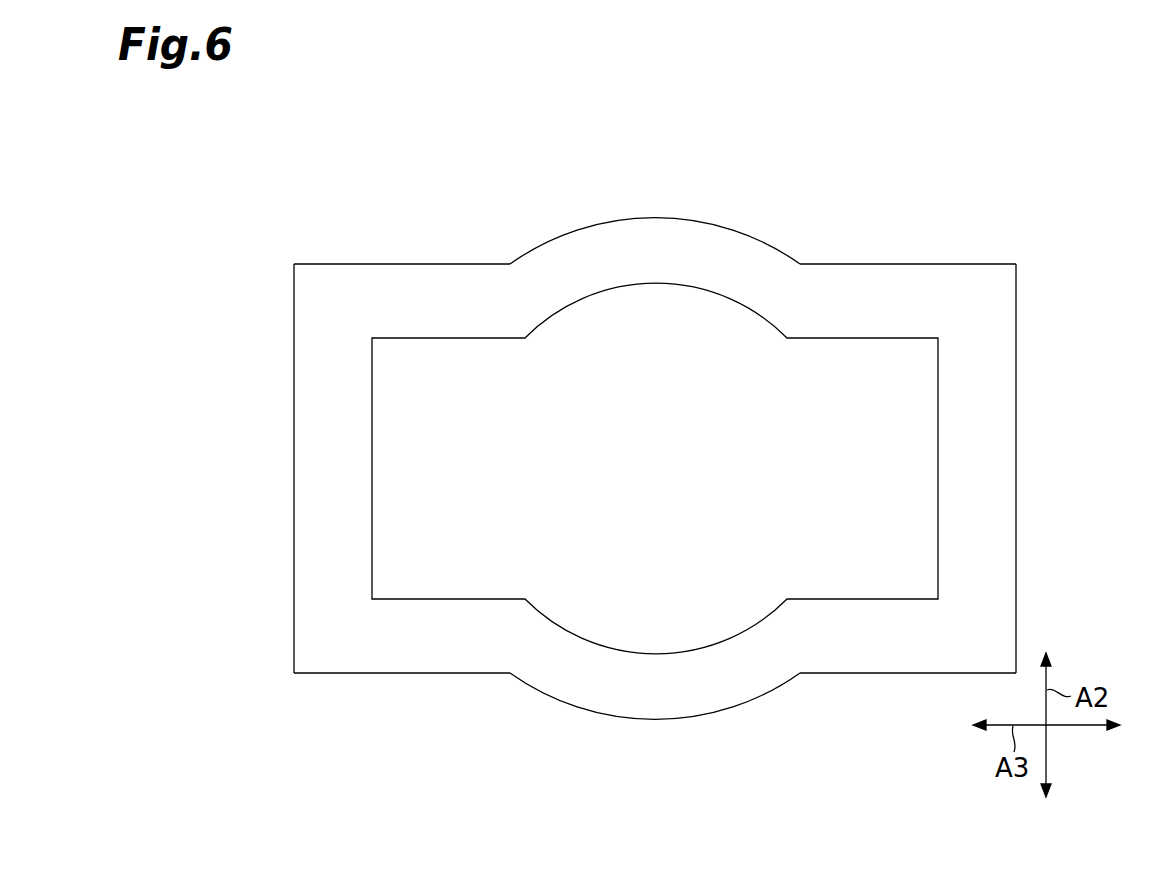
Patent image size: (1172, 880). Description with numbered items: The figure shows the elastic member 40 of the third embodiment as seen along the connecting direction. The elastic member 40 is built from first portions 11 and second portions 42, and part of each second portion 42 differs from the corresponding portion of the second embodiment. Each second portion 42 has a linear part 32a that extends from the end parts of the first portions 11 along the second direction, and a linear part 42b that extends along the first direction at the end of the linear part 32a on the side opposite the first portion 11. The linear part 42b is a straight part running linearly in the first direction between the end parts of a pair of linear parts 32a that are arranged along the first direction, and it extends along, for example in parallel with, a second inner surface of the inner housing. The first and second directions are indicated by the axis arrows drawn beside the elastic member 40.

The elastic member 40 is at (815, 180).
The first portion 11 is at (658, 226).
The linear part 32a is at (451, 279).
The second portion 42 is at (319, 460).
The linear part 42b is at (318, 402).